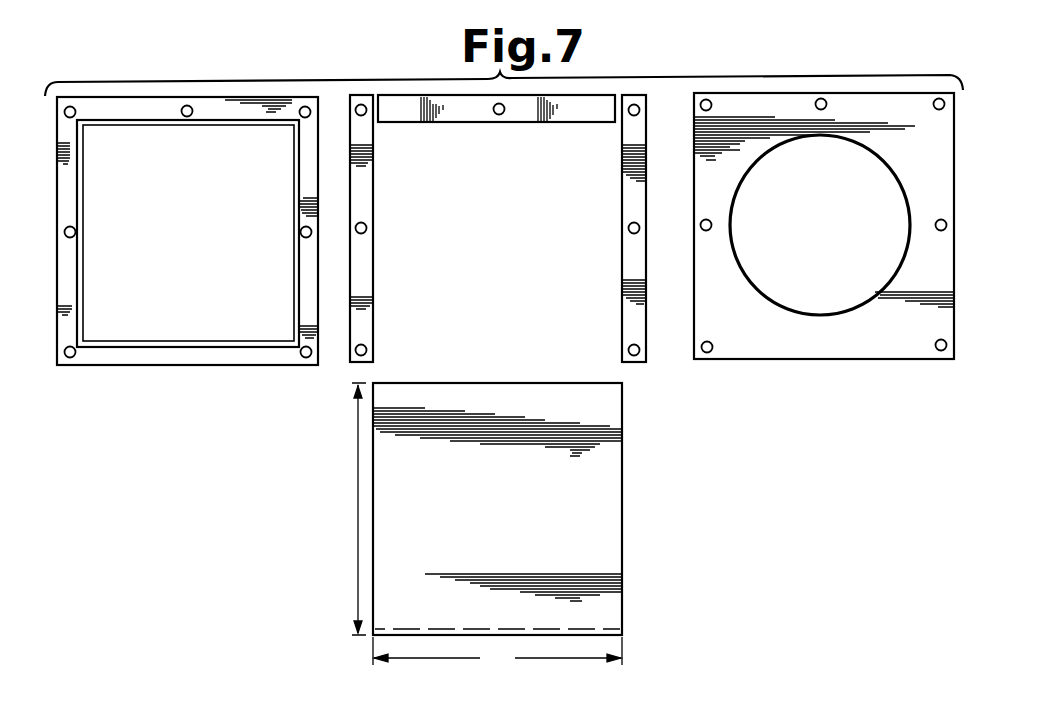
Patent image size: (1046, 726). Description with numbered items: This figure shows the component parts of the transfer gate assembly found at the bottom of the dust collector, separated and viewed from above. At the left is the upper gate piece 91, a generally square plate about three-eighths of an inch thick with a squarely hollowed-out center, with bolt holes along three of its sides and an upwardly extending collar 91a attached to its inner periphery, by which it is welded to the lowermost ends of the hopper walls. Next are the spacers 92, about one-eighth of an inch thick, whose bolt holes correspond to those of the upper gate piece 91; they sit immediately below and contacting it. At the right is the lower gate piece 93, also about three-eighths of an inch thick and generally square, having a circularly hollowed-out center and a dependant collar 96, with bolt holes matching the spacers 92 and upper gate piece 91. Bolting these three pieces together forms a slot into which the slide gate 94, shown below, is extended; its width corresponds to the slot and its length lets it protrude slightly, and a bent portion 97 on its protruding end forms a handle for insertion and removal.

The upper gate piece 91 is at (212, 365).
The upwardly extending collar 91a is at (128, 340).
The spacers 92 is at (363, 362).
The lower gate piece 93 is at (763, 360).
The slide gate 94 is at (622, 496).
The dependant collar 96 is at (752, 168).
The bent portion 97 is at (427, 636).